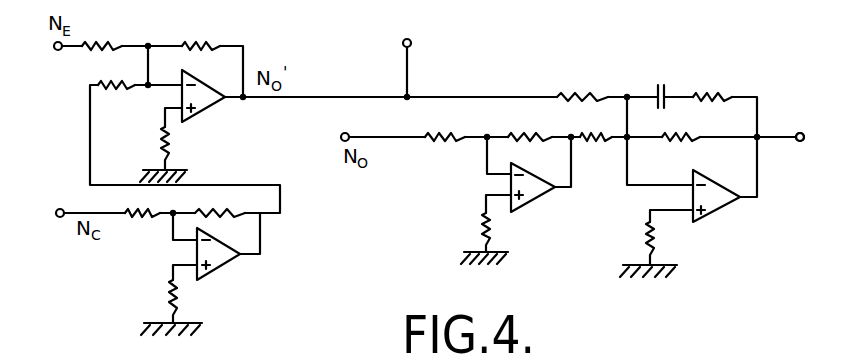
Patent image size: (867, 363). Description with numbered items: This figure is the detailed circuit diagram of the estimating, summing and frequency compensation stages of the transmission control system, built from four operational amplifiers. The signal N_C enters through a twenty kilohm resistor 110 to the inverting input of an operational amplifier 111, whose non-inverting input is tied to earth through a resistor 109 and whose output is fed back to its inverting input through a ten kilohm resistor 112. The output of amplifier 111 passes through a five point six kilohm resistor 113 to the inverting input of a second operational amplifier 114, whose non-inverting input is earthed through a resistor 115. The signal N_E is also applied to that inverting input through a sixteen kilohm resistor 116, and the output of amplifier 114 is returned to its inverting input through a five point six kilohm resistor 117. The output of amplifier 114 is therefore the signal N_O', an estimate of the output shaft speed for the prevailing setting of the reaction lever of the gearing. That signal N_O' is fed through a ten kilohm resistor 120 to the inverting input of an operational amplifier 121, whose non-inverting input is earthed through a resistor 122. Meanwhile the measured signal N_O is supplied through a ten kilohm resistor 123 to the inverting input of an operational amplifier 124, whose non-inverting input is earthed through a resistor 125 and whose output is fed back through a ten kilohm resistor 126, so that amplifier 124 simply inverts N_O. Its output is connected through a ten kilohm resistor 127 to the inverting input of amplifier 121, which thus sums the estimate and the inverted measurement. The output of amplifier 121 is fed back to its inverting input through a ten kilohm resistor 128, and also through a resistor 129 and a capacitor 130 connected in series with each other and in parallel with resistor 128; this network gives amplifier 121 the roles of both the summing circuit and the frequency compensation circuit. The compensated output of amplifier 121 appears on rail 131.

The resistor 109 is at (170, 297).
The resistor 110 is at (140, 219).
The operational amplifier 111 is at (213, 255).
The resistor 112 is at (213, 214).
The resistor 113 is at (121, 89).
The operational amplifier 114 is at (203, 95).
The resistor 115 is at (167, 143).
The resistor 116 is at (123, 17).
The resistor 117 is at (217, 17).
The resistor 120 is at (583, 83).
The operational amplifier 121 is at (717, 200).
The resistor 122 is at (655, 235).
The resistor 123 is at (442, 140).
The operational amplifier 124 is at (533, 190).
The resistor 125 is at (482, 233).
The resistor 126 is at (523, 130).
The resistor 127 is at (597, 141).
The resistor 128 is at (678, 141).
The resistor 129 is at (712, 85).
The capacitor 130 is at (655, 87).
The rail 131 is at (782, 142).